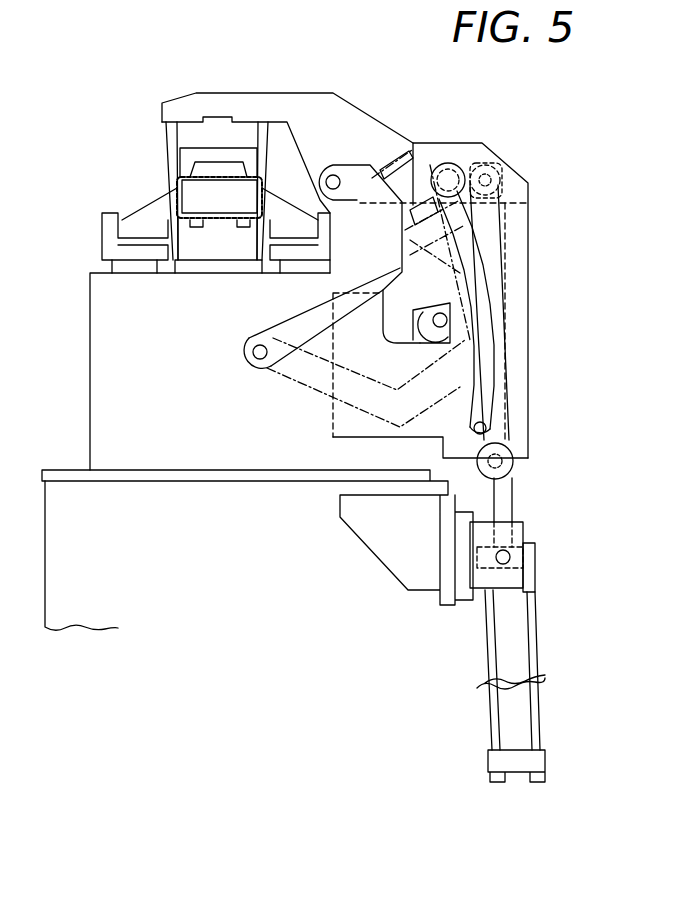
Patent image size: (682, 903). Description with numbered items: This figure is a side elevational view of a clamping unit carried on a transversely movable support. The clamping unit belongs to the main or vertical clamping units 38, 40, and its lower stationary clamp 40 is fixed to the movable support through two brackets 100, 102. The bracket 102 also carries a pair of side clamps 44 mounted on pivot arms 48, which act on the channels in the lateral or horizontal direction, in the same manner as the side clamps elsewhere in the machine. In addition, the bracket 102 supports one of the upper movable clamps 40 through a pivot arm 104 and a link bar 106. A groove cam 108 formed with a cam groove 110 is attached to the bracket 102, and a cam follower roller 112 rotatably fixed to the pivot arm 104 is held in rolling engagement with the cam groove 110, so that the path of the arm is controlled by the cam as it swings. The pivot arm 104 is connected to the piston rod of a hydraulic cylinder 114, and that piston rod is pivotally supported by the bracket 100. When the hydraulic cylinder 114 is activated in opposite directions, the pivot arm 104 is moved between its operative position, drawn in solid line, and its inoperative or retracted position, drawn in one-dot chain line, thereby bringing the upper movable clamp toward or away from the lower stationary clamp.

The main clamping unit 38 is at (190, 257).
The clamp 40 is at (190, 160).
The side clamps 44 is at (140, 213).
The pivot arms 48 is at (117, 263).
The bracket 100 is at (63, 489).
The bracket 102 is at (103, 387).
The pivot arm 104 is at (360, 113).
The link bar 106 is at (272, 323).
The groove cam 108 is at (523, 239).
The cam groove 110 is at (488, 288).
The cam follower roller 112 is at (456, 172).
The hydraulic cylinder 114 is at (517, 631).